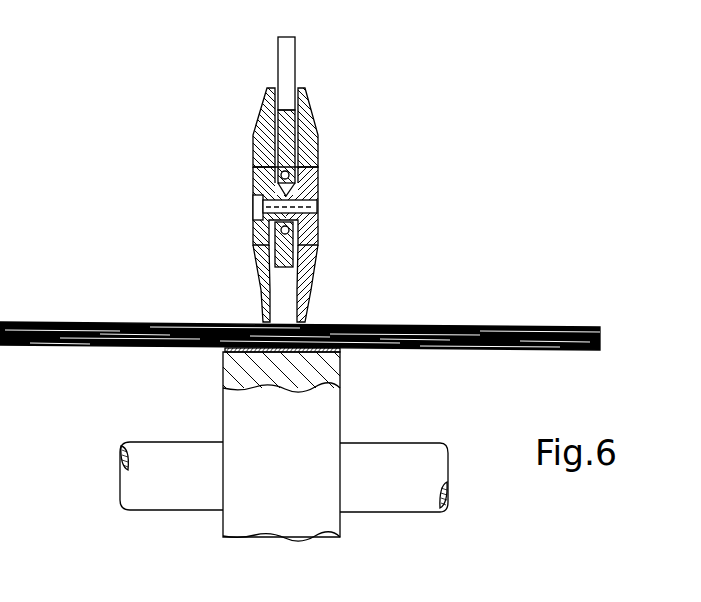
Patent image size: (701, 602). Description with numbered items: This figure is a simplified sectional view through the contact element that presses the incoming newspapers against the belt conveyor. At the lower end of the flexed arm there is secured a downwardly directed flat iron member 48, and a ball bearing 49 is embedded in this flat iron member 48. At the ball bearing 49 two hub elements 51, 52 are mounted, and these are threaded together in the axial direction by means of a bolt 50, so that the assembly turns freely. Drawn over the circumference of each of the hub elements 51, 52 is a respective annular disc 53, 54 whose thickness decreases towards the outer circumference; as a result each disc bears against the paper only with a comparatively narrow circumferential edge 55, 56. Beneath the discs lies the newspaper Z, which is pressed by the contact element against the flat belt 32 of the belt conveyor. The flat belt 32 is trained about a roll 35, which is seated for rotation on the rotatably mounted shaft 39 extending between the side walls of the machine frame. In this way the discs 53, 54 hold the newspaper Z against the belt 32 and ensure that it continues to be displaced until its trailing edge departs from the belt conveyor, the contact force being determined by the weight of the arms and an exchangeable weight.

The flat iron member 48 is at (288, 60).
The ball bearing 49 is at (290, 162).
The bolt 50 is at (252, 210).
The hub element 51 is at (317, 188).
The hub element 52 is at (262, 175).
The annular disc 53 is at (307, 253).
The annular disc 54 is at (262, 260).
The circumferential edge 55 is at (318, 317).
The circumferential edge 56 is at (252, 322).
The newspaper Z is at (457, 325).
The flat belt 32 is at (243, 355).
The roll 35 is at (330, 373).
The shaft 39 is at (403, 452).